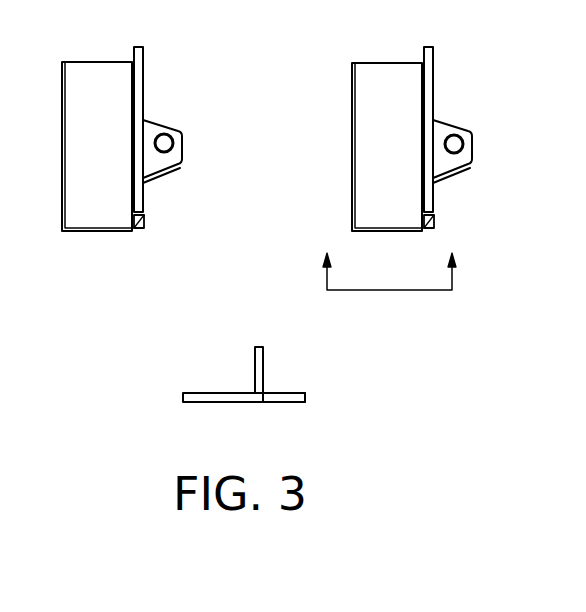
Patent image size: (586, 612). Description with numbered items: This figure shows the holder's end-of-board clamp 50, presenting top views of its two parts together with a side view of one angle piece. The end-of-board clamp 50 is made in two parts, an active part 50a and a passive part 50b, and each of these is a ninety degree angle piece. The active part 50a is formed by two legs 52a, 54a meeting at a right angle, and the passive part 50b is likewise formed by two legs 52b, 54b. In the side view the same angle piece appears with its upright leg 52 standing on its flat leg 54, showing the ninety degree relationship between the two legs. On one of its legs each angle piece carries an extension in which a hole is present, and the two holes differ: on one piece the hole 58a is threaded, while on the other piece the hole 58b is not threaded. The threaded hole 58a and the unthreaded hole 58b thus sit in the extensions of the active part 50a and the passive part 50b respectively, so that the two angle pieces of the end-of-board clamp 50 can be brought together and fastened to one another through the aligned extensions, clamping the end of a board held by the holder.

The end-of-board clamp 50 is at (140, 147).
The active part 50a is at (143, 196).
The passive part 50b is at (428, 85).
The leg 52 is at (255, 356).
The leg 52a is at (145, 223).
The leg 52b is at (434, 191).
The leg 54 is at (190, 393).
The leg 54a is at (72, 232).
The leg 54b is at (370, 215).
The threaded hole 58a is at (175, 143).
The unthreaded hole 58b is at (465, 145).